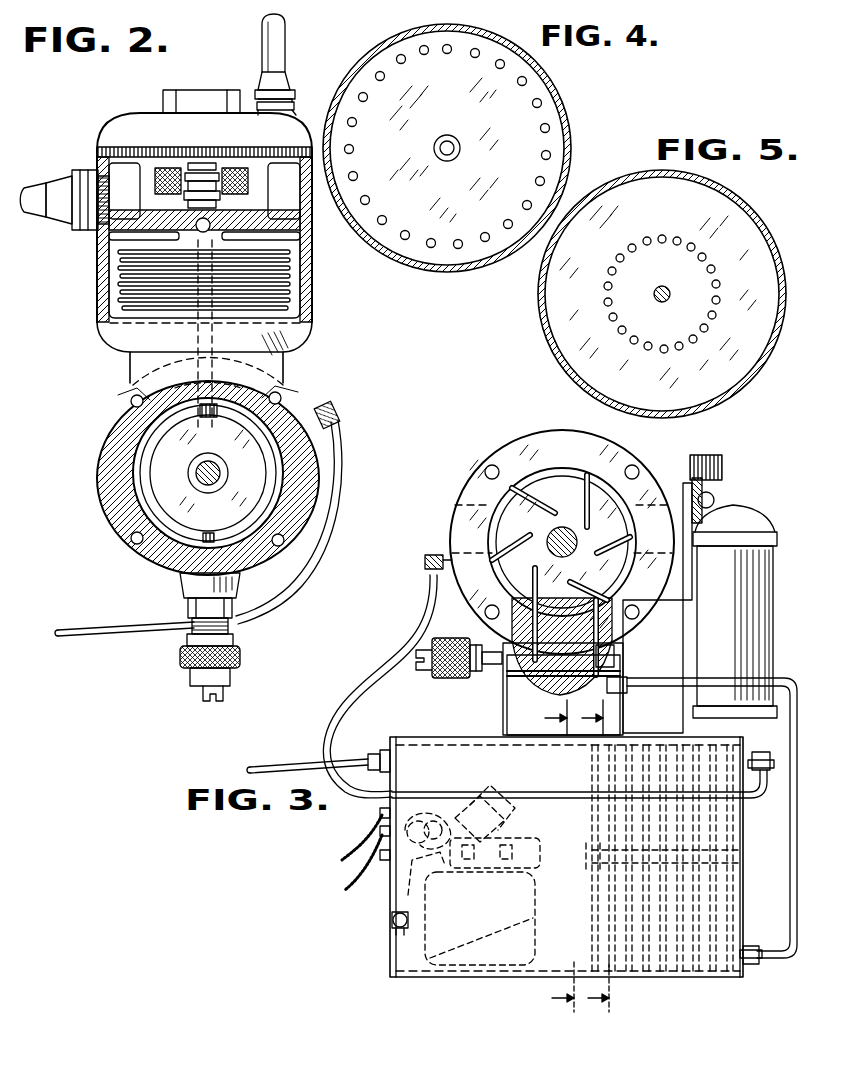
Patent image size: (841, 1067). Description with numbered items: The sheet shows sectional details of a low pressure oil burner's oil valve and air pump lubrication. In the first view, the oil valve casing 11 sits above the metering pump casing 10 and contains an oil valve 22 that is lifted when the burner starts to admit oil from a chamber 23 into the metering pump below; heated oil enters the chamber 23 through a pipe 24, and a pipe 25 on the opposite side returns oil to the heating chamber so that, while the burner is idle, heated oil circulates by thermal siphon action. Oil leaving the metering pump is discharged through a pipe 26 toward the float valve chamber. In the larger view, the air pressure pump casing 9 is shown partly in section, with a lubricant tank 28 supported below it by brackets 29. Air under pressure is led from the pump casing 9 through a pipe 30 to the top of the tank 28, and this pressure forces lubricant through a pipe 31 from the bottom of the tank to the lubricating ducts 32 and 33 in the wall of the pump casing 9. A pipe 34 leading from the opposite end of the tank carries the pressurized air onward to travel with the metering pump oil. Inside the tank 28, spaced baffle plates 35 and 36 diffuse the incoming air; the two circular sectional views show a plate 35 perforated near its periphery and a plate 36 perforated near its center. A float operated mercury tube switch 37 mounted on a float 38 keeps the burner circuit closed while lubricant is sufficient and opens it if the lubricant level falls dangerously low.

In FIG. 3, the air pressure pump casing 9 is at (463, 476).
In FIG. 2, the metering pump casing 10 is at (94, 470).
In FIG. 2, the oil valve casing 11 is at (97, 276).
In FIG. 2, the oil valve 22 is at (186, 197).
In FIG. 2, the chamber 23 is at (204, 191).
In FIG. 2, the pipe 24 is at (268, 57).
In FIG. 2, the pipe 25 is at (36, 206).
In FIG. 2, the pipe 26 is at (118, 630).
In FIG. 4, the lubricant tank 28 is at (391, 260).
In FIG. 5, the lubricant tank 28 is at (560, 362).
In FIG. 3, the lubricant tank 28 is at (442, 979).
In FIG. 3, the brackets 29 is at (503, 720).
In FIG. 3, the pipe 30 is at (370, 662).
In FIG. 3, the pipe 31 is at (790, 840).
In FIG. 3, the lubricating duct 32 is at (600, 630).
In FIG. 3, the lubricating duct 33 is at (530, 622).
In FIG. 3, the pipe 34 is at (284, 770).
In FIG. 4, the baffle plate 35 is at (441, 258).
In FIG. 3, the baffle plate 35 is at (598, 883).
In FIG. 5, the baffle plate 36 is at (676, 404).
In FIG. 3, the baffle plate 36 is at (598, 905).
In FIG. 3, the float operated mercury tube switch 37 is at (455, 815).
In FIG. 3, the float 38 is at (400, 947).